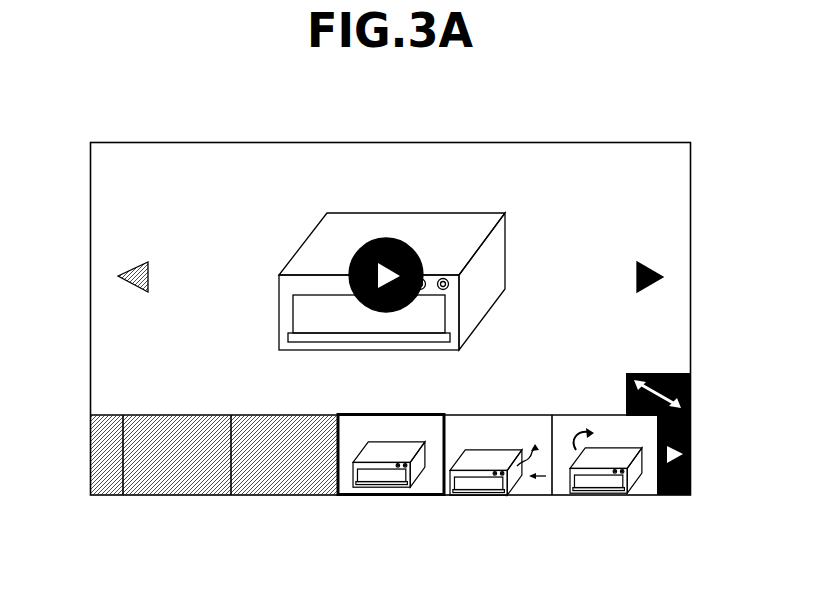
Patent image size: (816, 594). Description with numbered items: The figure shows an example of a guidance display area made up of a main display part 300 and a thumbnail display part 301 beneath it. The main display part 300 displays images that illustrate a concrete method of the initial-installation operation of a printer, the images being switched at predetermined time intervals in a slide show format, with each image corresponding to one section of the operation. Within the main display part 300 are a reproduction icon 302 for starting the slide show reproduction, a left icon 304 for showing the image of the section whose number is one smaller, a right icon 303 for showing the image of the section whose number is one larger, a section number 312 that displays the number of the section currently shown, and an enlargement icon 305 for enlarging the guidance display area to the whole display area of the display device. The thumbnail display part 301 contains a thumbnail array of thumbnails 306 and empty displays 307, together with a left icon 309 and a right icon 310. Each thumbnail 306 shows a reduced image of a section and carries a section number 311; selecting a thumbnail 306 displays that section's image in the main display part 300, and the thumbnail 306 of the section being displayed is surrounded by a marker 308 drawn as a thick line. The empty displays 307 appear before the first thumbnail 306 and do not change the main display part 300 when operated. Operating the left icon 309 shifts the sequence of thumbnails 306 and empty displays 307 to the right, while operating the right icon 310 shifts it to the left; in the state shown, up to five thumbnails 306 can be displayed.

The main display part 300 is at (407, 142).
The thumbnail display part 301 is at (388, 442).
The reproduction icon 302 is at (386, 238).
The right icon 303 is at (660, 272).
The left icon 304 is at (132, 268).
The enlargement icon 305 is at (686, 413).
The thumbnail 306 is at (490, 469).
The empty display 307 is at (183, 468).
The marker 308 is at (357, 497).
The left icon 309 is at (106, 452).
The right icon 310 is at (690, 442).
The section number 311 is at (446, 430).
The section number 312 is at (665, 174).